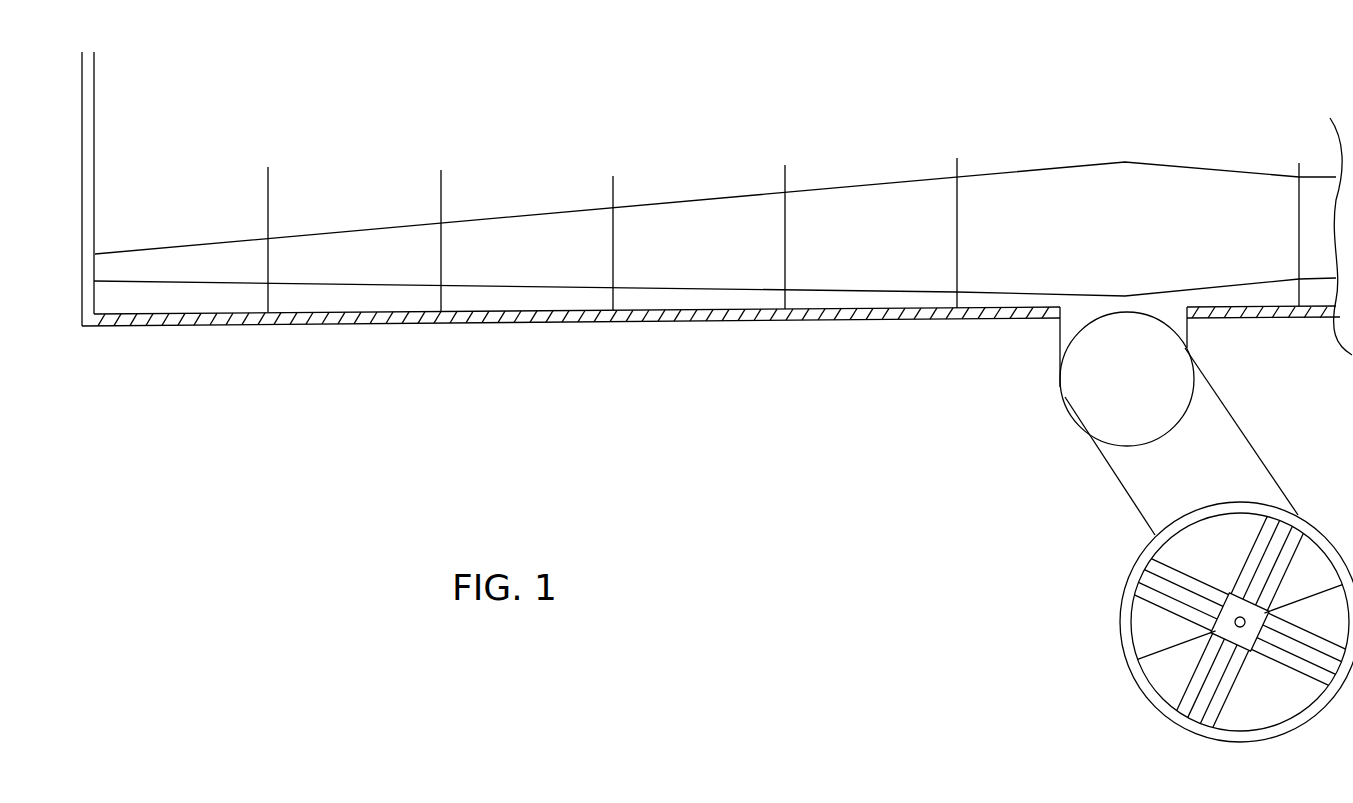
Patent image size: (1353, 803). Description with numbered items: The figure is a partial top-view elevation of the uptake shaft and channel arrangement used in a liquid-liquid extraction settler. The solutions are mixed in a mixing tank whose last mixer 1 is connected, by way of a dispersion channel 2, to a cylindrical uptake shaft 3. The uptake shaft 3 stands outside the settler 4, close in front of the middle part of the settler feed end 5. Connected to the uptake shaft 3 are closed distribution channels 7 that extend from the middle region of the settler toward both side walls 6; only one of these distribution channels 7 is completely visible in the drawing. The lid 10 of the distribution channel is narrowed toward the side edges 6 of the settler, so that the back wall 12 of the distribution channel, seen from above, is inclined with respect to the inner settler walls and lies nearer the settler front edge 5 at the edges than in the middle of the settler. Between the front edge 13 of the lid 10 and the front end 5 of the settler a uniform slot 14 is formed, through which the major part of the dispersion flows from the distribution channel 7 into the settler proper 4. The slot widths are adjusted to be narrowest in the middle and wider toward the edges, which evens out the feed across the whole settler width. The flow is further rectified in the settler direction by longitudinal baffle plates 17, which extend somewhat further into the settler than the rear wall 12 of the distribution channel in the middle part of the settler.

The mixer 1 is at (1122, 624).
The dispersion channel 2 is at (1120, 488).
The uptake shaft 3 is at (1060, 387).
The settler 4 is at (582, 326).
The settler feed end 5 is at (733, 322).
The side walls 6 is at (80, 163).
The distribution channels 7 is at (683, 196).
The lid 10 is at (288, 253).
The back wall 12 is at (191, 243).
The front edge 13 is at (457, 285).
The slot 14 is at (282, 303).
The longitudinal baffle plates 17 is at (441, 263).